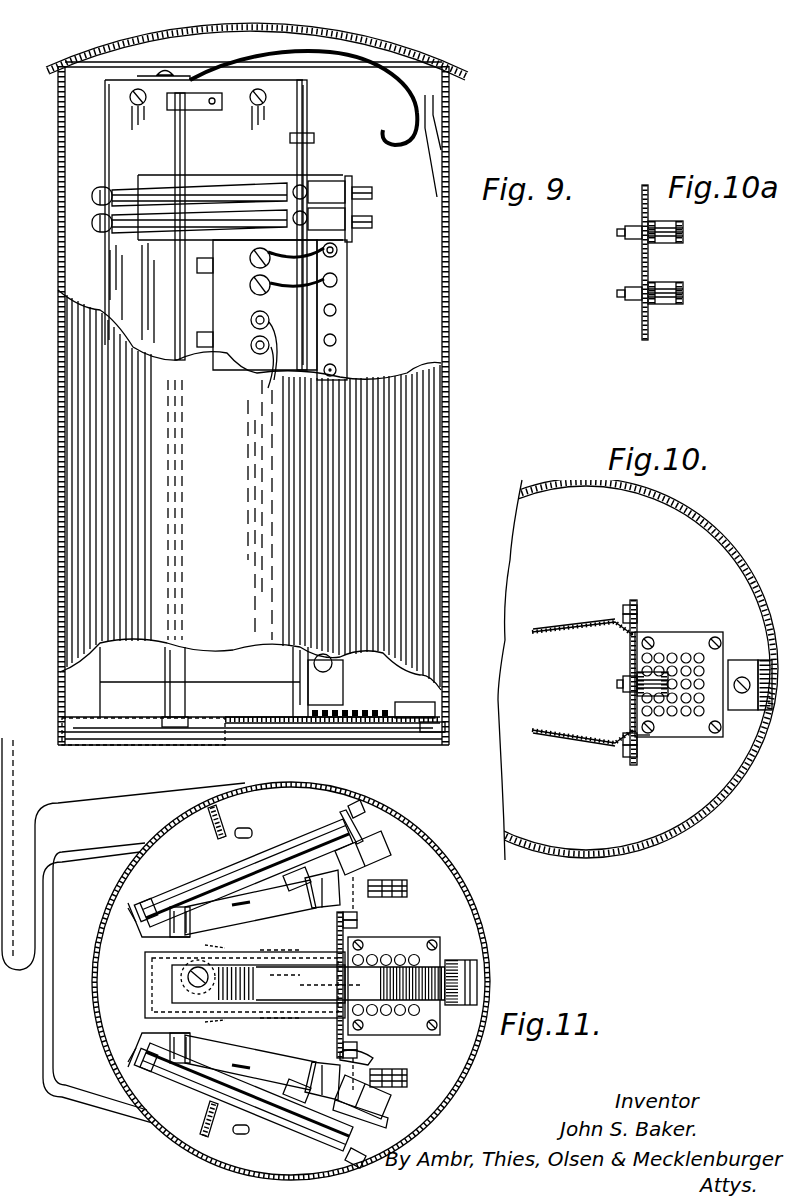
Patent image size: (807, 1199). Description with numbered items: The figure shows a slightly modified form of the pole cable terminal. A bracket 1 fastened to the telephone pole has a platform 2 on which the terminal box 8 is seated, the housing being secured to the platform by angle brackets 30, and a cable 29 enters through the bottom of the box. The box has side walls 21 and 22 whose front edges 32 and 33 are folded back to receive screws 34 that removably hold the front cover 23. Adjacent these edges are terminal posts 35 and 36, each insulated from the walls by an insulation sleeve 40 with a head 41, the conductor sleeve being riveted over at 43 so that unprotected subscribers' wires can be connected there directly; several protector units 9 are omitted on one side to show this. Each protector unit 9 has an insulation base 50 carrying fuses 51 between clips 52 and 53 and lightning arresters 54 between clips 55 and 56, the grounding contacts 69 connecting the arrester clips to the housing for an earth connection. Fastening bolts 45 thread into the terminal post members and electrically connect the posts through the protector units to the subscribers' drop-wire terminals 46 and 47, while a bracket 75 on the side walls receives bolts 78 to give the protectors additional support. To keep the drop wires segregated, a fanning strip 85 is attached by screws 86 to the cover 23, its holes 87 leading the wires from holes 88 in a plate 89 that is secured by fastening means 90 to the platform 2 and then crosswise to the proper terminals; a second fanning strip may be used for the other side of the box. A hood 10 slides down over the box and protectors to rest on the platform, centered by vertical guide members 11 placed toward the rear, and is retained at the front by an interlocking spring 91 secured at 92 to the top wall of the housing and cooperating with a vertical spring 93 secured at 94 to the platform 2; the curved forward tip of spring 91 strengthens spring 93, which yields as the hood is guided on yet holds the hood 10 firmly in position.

In FIG. 11, the bracket 1 is at (55, 772).
In FIG. 9, the platform 2 is at (258, 730).
In FIG. 10, the platform 2 is at (632, 790).
In FIG. 9, the terminal box 8 is at (100, 140).
In FIG. 10, the terminal box 8 is at (557, 627).
In FIG. 11, the terminal box 8 is at (145, 978).
In FIG. 9, the protector units 9 is at (250, 195).
In FIG. 11, the protector units 9 is at (273, 827).
In FIG. 9, the hood 10 is at (455, 97).
In FIG. 10, the hood 10 is at (712, 830).
In FIG. 11, the hood 10 is at (108, 900).
In FIG. 9, the vertical guide members 11 is at (180, 295).
In FIG. 11, the vertical guide members 11 is at (208, 820).
In FIG. 10, the side wall 21 is at (588, 622).
In FIG. 11, the side wall 21 is at (250, 980).
In FIG. 10, the side wall 22 is at (565, 744).
In FIG. 11, the side wall 22 is at (204, 1000).
In FIG. 9, the front cover 23 is at (313, 108).
In FIG. 10A, the front cover 23 is at (642, 205).
In FIG. 10, the front cover 23 is at (630, 652).
In FIG. 11, the front cover 23 is at (337, 1005).
In FIG. 9, the cable 29 is at (320, 340).
In FIG. 9, the angle brackets 30 is at (110, 693).
In FIG. 10, the front edge 32 is at (628, 605).
In FIG. 11, the front edge 32 is at (361, 927).
In FIG. 9, the front edge 33 is at (305, 93).
In FIG. 10, the front edge 33 is at (625, 748).
In FIG. 11, the front edge 33 is at (358, 1030).
In FIG. 9, the screws 34 is at (318, 138).
In FIG. 10, the screws 34 is at (638, 618).
In FIG. 11, the screws 34 is at (357, 915).
In FIG. 11, the terminal posts 35 is at (279, 980).
In FIG. 10, the terminal posts 36 is at (645, 740).
In FIG. 9, the insulation sleeve 40 is at (232, 357).
In FIG. 9, the head 41 is at (270, 365).
In FIG. 9, the riveted-over end 43 is at (250, 322).
In FIG. 9, the fastening bolts 45 is at (290, 183).
In FIG. 11, the fastening bolts 45 is at (299, 865).
In FIG. 11, the subscribers' terminal 46 is at (408, 888).
In FIG. 9, the subscribers' terminal 47 is at (373, 210).
In FIG. 11, the subscribers' terminal 47 is at (405, 1088).
In FIG. 11, the base 50 is at (258, 900).
In FIG. 9, the fuses 51 is at (210, 190).
In FIG. 11, the fuses 51 is at (218, 880).
In FIG. 11, the fuse clips 52 is at (140, 937).
In FIG. 11, the fuse clips 53 is at (352, 806).
In FIG. 9, the lightning arresters 54 is at (350, 180).
In FIG. 11, the lightning arresters 54 is at (360, 835).
In FIG. 11, the clips 55 is at (338, 1013).
In FIG. 11, the clips 56 is at (380, 862).
In FIG. 11, the grounding contacts 69 is at (374, 1058).
In FIG. 11, the bracket 75 is at (223, 982).
In FIG. 11, the bolts 78 is at (232, 904).
In FIG. 9, the fanning strip 85 is at (345, 266).
In FIG. 10A, the fanning strip 85 is at (672, 220).
In FIG. 10, the fanning strip 85 is at (637, 678).
In FIG. 11, the fanning strip 85 is at (350, 983).
In FIG. 9, the screws 86 is at (347, 372).
In FIG. 10A, the screws 86 is at (625, 292).
In FIG. 10, the screws 86 is at (618, 686).
In FIG. 9, the holes 87 is at (340, 305).
In FIG. 10A, the holes 87 is at (665, 280).
In FIG. 10, the holes 87 is at (637, 700).
In FIG. 9, the holes 88 is at (385, 710).
In FIG. 10, the holes 88 is at (699, 652).
In FIG. 11, the holes 88 is at (414, 954).
In FIG. 9, the plate 89 is at (380, 724).
In FIG. 10, the plate 89 is at (717, 636).
In FIG. 11, the plate 89 is at (431, 940).
In FIG. 10, the fastening means 90 is at (713, 734).
In FIG. 9, the interlocking spring 91 is at (292, 60).
In FIG. 11, the interlocking spring 91 is at (248, 977).
In FIG. 9, the securing point 92 is at (168, 72).
In FIG. 11, the securing point 92 is at (186, 980).
In FIG. 9, the vertical spring 93 is at (445, 265).
In FIG. 10, the vertical spring 93 is at (744, 660).
In FIG. 11, the vertical spring 93 is at (478, 980).
In FIG. 9, the securing point 94 is at (445, 720).
In FIG. 10, the securing point 94 is at (762, 712).